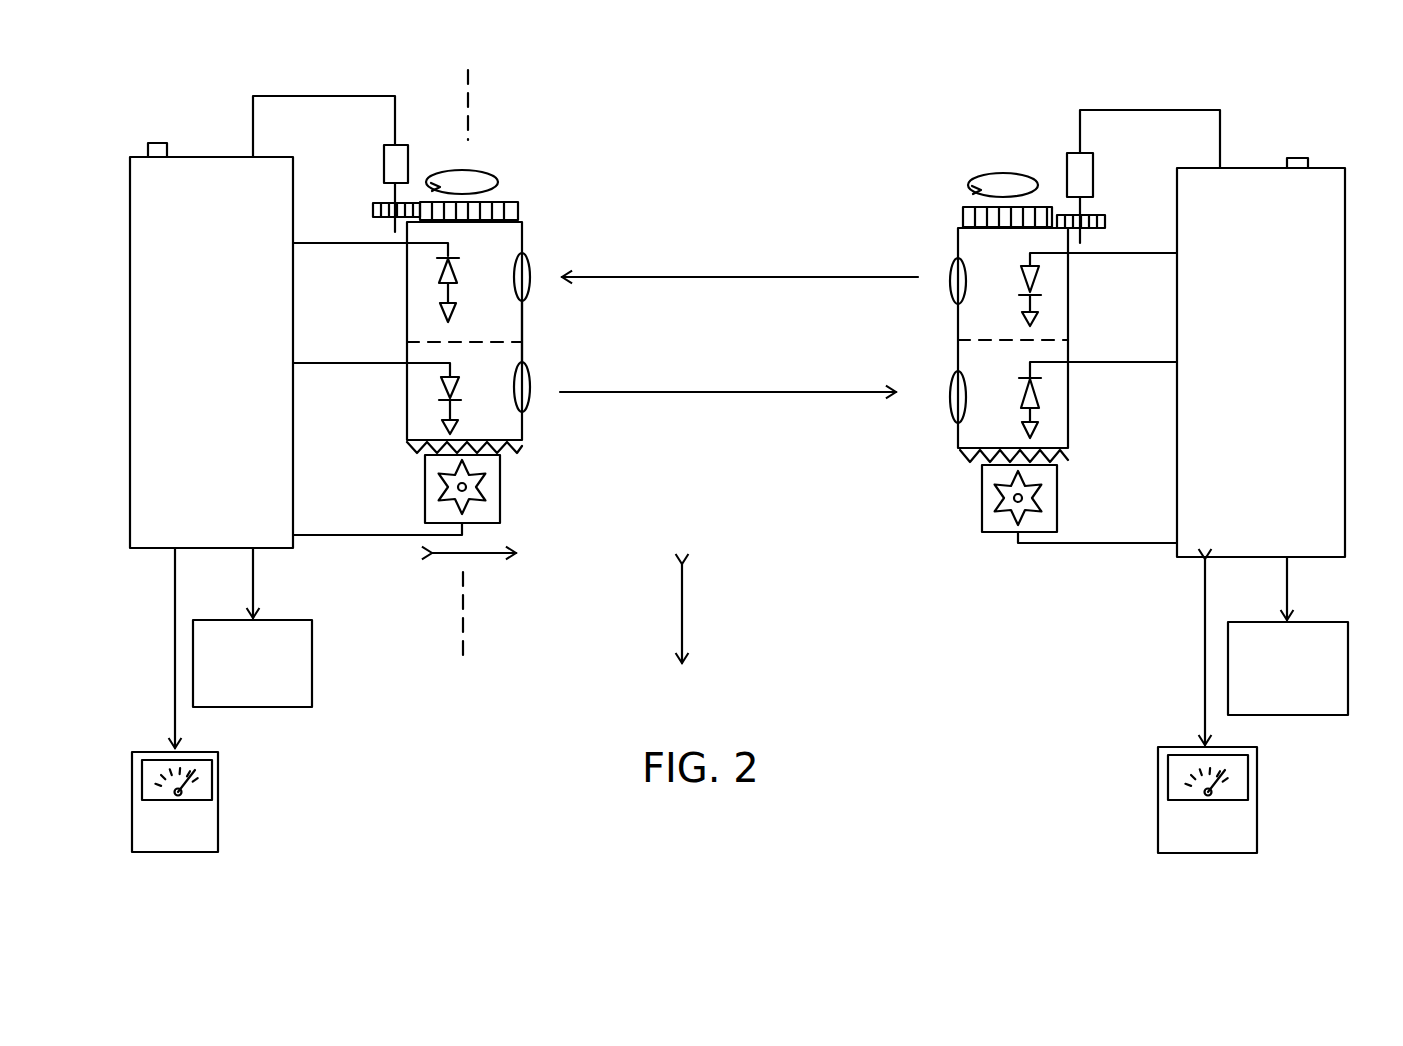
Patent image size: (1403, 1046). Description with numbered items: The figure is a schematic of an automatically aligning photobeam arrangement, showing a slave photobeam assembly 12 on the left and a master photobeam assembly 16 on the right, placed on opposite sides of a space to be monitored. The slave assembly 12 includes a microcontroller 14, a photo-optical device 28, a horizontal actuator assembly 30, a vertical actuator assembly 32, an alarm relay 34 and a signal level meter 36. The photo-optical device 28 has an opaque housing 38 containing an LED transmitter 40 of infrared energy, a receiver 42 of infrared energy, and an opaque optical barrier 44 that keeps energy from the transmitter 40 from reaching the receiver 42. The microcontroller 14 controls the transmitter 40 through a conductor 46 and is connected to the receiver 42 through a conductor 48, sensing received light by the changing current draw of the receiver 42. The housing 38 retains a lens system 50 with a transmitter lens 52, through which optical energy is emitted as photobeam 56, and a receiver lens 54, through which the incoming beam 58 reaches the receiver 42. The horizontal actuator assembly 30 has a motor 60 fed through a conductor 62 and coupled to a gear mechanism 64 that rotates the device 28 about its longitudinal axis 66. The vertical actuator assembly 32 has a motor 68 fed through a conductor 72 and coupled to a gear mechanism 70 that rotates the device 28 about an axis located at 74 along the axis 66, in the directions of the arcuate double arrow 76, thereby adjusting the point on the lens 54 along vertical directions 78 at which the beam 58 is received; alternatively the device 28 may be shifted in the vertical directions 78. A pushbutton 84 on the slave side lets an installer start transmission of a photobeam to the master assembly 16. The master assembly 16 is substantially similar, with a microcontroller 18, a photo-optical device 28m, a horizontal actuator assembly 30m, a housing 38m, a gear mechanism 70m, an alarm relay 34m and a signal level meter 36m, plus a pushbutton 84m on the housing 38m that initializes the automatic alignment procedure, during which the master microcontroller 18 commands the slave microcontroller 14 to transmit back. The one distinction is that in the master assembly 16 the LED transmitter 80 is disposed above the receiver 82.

The slave photobeam assembly 12 is at (447, 705).
The microcontroller 14 is at (225, 504).
The master photobeam assembly 16 is at (1018, 725).
The microcontroller 18 is at (1277, 521).
The photo-optical device 28 is at (583, 453).
The photo-optical device 28m is at (890, 477).
The horizontal actuator assembly 30 is at (550, 178).
The horizontal actuator assembly 30m is at (933, 185).
The vertical actuator assembly 32 is at (527, 538).
The alarm relay 34 is at (275, 707).
The alarm relay 34m is at (1273, 715).
The signal level meter 36 is at (220, 830).
The signal level meter 36m is at (1257, 830).
The opaque housing 38 is at (407, 408).
The master assembly housing 38m is at (1070, 430).
The LED transmitter 40 is at (440, 388).
The receiver 42 is at (437, 270).
The opaque optical barrier 44 is at (430, 345).
The conductor 46 is at (325, 363).
The conductor 48 is at (310, 243).
The lens system 50 is at (525, 325).
The transmitter lens 52 is at (533, 378).
The receiver lens 54 is at (527, 263).
The photobeam 56 is at (753, 394).
The beam 58 is at (755, 276).
The motor 60 is at (384, 165).
The conductor 62 is at (253, 118).
The gear mechanism 64 is at (507, 200).
The longitudinal axis 66 is at (467, 620).
The motor 68 is at (423, 507).
The gear mechanism 70 is at (523, 490).
The gear mechanism 70m is at (952, 515).
The conductor 72 is at (363, 538).
The axis location 74 is at (467, 90).
The arcuate double arrow 76 is at (468, 557).
The vertical directions 78 is at (683, 613).
The LED transmitter 80 is at (1043, 275).
The receiver 82 is at (1037, 395).
The pushbutton 84 is at (160, 143).
The pushbutton 84m is at (1297, 157).